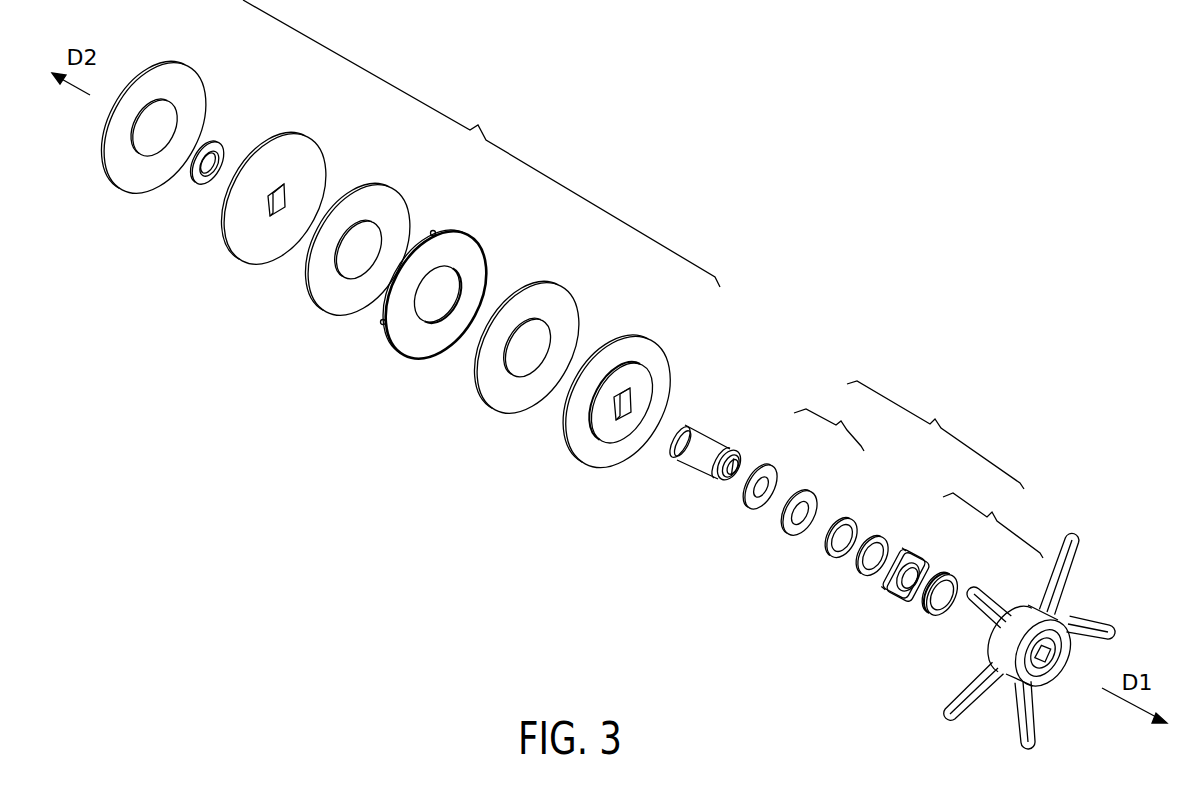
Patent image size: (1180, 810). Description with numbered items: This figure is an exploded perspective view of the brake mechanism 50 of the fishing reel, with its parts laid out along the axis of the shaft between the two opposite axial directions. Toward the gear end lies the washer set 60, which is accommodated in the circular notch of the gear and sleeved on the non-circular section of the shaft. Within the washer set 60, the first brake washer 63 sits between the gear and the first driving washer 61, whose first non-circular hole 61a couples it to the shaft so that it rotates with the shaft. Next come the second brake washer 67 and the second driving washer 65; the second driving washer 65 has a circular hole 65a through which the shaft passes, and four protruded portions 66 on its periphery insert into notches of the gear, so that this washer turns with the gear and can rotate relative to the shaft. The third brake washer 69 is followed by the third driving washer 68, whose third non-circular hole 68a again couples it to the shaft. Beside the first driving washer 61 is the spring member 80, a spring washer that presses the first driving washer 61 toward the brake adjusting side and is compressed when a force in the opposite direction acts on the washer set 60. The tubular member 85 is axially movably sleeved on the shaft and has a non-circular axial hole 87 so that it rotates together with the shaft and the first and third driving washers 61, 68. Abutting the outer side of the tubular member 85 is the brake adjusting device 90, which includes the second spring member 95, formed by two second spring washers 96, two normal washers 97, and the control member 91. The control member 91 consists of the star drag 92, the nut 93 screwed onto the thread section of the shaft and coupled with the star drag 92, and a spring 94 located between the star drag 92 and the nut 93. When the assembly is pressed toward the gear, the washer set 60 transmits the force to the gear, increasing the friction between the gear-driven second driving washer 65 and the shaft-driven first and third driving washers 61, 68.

The brake mechanism 50 is at (884, 216).
The washer set 60 is at (481, 143).
The first driving washer 61 is at (280, 192).
The first non-circular hole 61a is at (278, 215).
The first brake washer 63 is at (187, 88).
The second driving washer 65 is at (420, 291).
The circular hole 65a is at (430, 322).
The protruded portions 66 is at (381, 324).
The second brake washer 67 is at (382, 203).
The third driving washer 68 is at (623, 401).
The third non-circular hole 68a is at (622, 422).
The third brake washer 69 is at (557, 307).
The spring member 80 is at (203, 182).
The tubular member 85 is at (706, 463).
The non-circular axial hole 87 is at (724, 478).
The brake adjusting device 90 is at (967, 565).
The control member 91 is at (998, 618).
The star drag 92 is at (1007, 600).
The nut 93 is at (920, 553).
The spring 94 is at (957, 582).
The second spring member 95 is at (800, 468).
The second spring washers 96 is at (773, 467).
The normal washers 97 is at (882, 533).